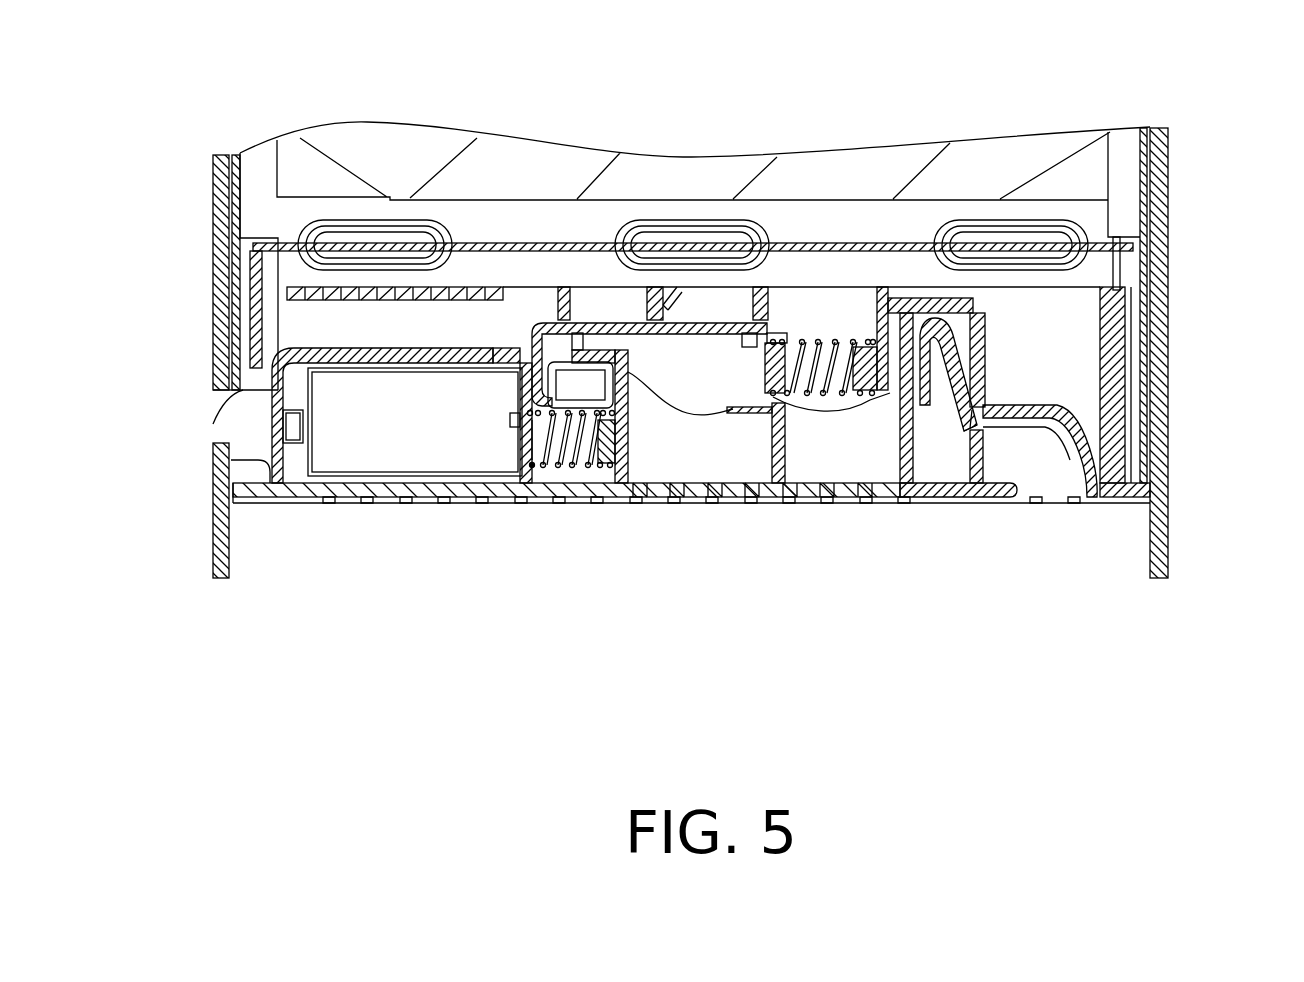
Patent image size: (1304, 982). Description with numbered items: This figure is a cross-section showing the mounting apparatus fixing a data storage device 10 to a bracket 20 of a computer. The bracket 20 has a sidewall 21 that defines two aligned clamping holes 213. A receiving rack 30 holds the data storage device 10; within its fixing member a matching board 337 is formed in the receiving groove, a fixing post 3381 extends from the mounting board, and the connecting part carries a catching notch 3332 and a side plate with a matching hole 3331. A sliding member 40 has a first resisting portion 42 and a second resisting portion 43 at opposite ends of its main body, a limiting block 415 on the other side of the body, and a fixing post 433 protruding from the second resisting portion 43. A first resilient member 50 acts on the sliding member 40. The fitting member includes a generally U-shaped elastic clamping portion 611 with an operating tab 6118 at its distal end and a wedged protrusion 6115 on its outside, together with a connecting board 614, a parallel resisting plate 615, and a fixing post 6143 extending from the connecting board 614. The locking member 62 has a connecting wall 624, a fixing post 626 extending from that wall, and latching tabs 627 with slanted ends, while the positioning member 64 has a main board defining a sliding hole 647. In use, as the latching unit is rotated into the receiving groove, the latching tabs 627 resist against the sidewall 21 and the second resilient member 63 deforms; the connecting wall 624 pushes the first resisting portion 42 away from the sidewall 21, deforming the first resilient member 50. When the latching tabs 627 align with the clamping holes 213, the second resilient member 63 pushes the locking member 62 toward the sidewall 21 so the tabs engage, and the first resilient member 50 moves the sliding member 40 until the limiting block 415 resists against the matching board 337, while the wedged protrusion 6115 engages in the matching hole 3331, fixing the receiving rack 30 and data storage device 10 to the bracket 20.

The data storage device 10 is at (373, 157).
The bracket 20 is at (212, 238).
The sidewall 21 is at (223, 337).
The clamping holes 213 is at (218, 405).
The receiving rack 30 is at (237, 153).
The sliding member 40 is at (540, 323).
The first resisting portion 42 is at (562, 357).
The second resisting portion 43 is at (790, 338).
The limiting block 415 is at (698, 297).
The fixing post 433 is at (793, 400).
The first resilient member 50 is at (840, 400).
The matching board 337 is at (598, 298).
The fixing post 3381 is at (863, 335).
The matching hole 3331 is at (977, 375).
The catching notch 3332 is at (1040, 463).
The clamping portion 611 is at (945, 450).
The wedged protrusion 6115 is at (973, 427).
The operating tab 6118 is at (998, 490).
The connecting board 614 is at (632, 372).
The resisting plate 615 is at (778, 440).
The locking member 62 is at (410, 437).
The connecting wall 624 is at (520, 397).
The fixing post 626 is at (533, 465).
The latching tab 627 is at (223, 430).
The second resilient member 63 is at (578, 462).
The fixing post 6143 is at (602, 462).
The positioning member 64 is at (367, 362).
The sliding hole 647 is at (512, 350).